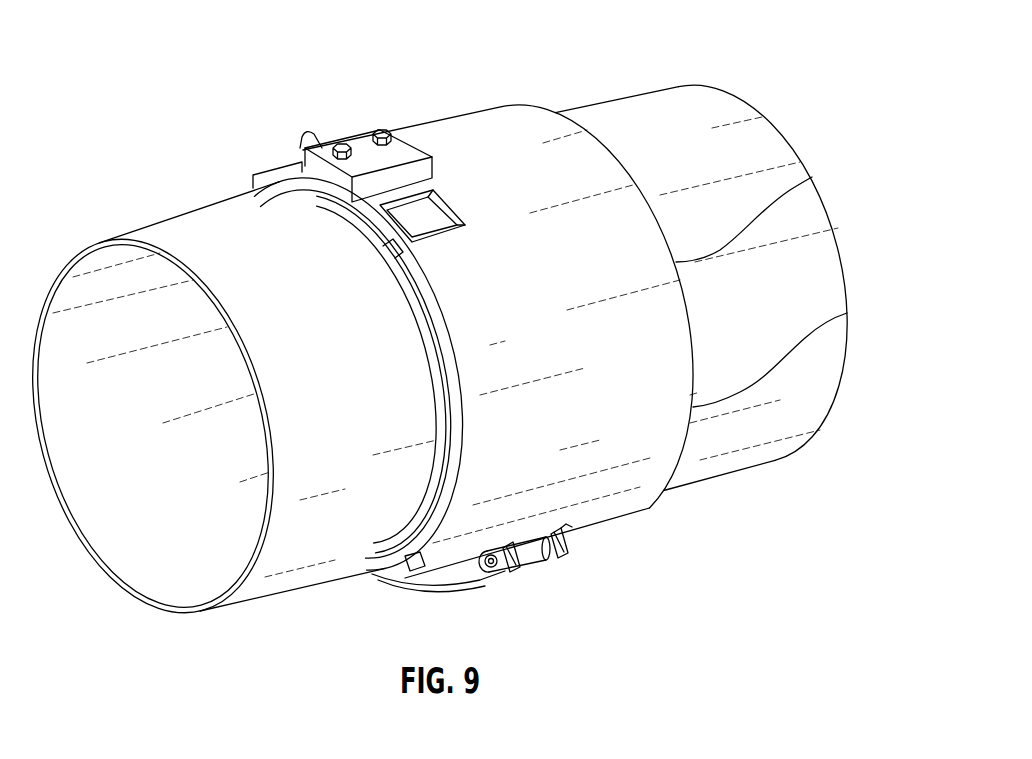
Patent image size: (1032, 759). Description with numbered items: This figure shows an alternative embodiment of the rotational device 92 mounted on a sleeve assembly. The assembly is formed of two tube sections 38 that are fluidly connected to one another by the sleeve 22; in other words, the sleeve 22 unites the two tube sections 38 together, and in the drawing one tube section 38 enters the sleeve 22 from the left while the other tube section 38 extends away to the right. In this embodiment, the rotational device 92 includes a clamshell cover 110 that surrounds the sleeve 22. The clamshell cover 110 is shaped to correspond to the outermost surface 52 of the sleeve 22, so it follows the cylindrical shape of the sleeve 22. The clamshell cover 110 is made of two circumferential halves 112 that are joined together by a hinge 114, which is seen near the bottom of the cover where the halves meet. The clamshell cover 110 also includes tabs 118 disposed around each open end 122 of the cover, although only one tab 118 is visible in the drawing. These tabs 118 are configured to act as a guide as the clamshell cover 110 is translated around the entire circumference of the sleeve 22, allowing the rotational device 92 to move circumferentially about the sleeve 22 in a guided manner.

The sleeve 22 is at (437, 381).
The tube section 38 is at (168, 233).
The outermost surface 52 is at (418, 296).
The rotational device 92 is at (497, 97).
The clamshell cover 110 is at (812, 177).
The circumferential half 112 is at (248, 181).
The hinge 114 is at (550, 580).
The tab 118 is at (374, 252).
The open end 122 is at (330, 216).